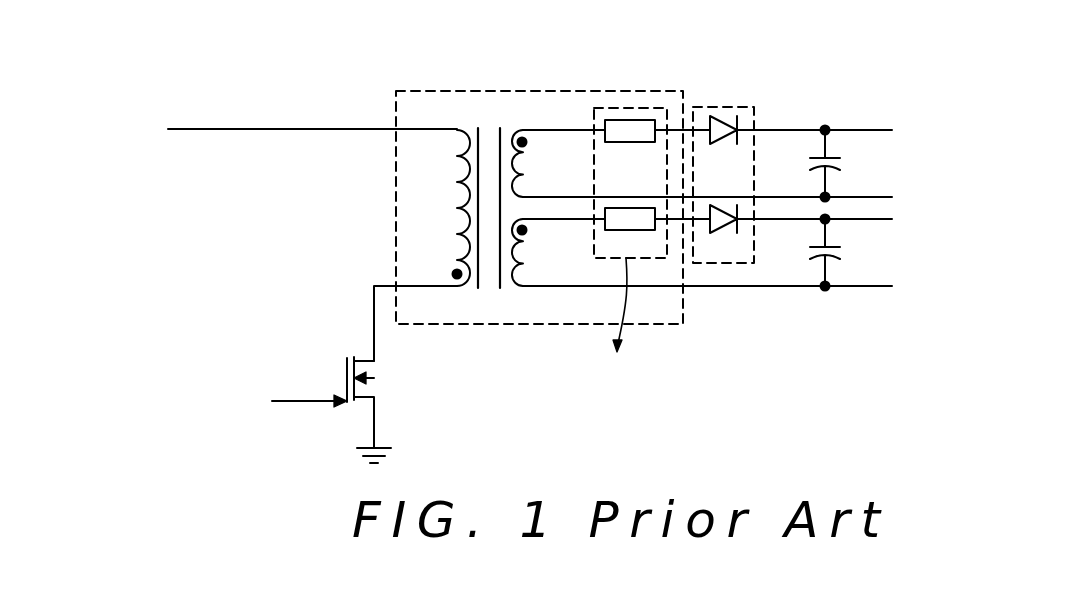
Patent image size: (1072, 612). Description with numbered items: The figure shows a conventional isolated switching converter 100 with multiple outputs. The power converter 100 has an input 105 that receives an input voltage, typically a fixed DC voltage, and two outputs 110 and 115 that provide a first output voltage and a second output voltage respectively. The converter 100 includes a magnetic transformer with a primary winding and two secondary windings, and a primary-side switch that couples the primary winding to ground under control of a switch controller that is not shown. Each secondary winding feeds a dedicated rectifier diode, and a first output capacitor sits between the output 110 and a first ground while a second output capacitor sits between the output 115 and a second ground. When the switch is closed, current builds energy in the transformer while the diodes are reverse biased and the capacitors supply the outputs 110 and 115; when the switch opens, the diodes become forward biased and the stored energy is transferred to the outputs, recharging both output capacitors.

The isolated switching converter 100 is at (536, 275).
The input 105 is at (170, 129).
The output 110 is at (830, 217).
The output 115 is at (830, 128).